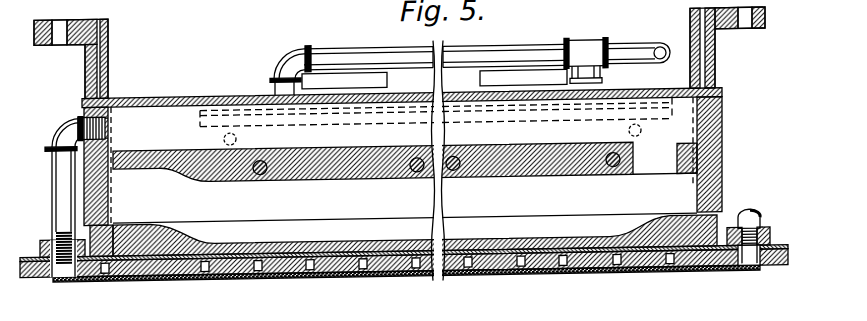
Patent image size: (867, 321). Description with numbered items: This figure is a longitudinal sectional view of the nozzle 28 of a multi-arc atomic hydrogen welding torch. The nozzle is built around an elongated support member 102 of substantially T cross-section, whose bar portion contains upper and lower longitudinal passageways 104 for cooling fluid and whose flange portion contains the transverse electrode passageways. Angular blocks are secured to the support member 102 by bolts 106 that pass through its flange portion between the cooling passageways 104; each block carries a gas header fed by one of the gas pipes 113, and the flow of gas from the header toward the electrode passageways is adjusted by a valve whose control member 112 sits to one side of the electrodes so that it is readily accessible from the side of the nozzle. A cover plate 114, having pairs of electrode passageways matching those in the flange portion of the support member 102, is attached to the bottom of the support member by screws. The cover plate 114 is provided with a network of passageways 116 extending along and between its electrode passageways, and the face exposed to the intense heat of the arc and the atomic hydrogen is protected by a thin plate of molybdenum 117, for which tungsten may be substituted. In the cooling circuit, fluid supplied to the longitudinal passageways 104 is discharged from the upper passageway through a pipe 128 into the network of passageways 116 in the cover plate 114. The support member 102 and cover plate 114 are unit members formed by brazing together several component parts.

The nozzle 28 is at (217, 70).
The support member 102 is at (722, 155).
The longitudinal passageways 104 is at (143, 119).
The bolts 106 is at (262, 180).
The control member 112 is at (265, 316).
The gas pipes 113 is at (528, 56).
The cover plate 114 is at (772, 278).
The network of passageways 116 is at (563, 280).
The plate of molybdenum 117 is at (650, 283).
The pipe 128 is at (55, 183).